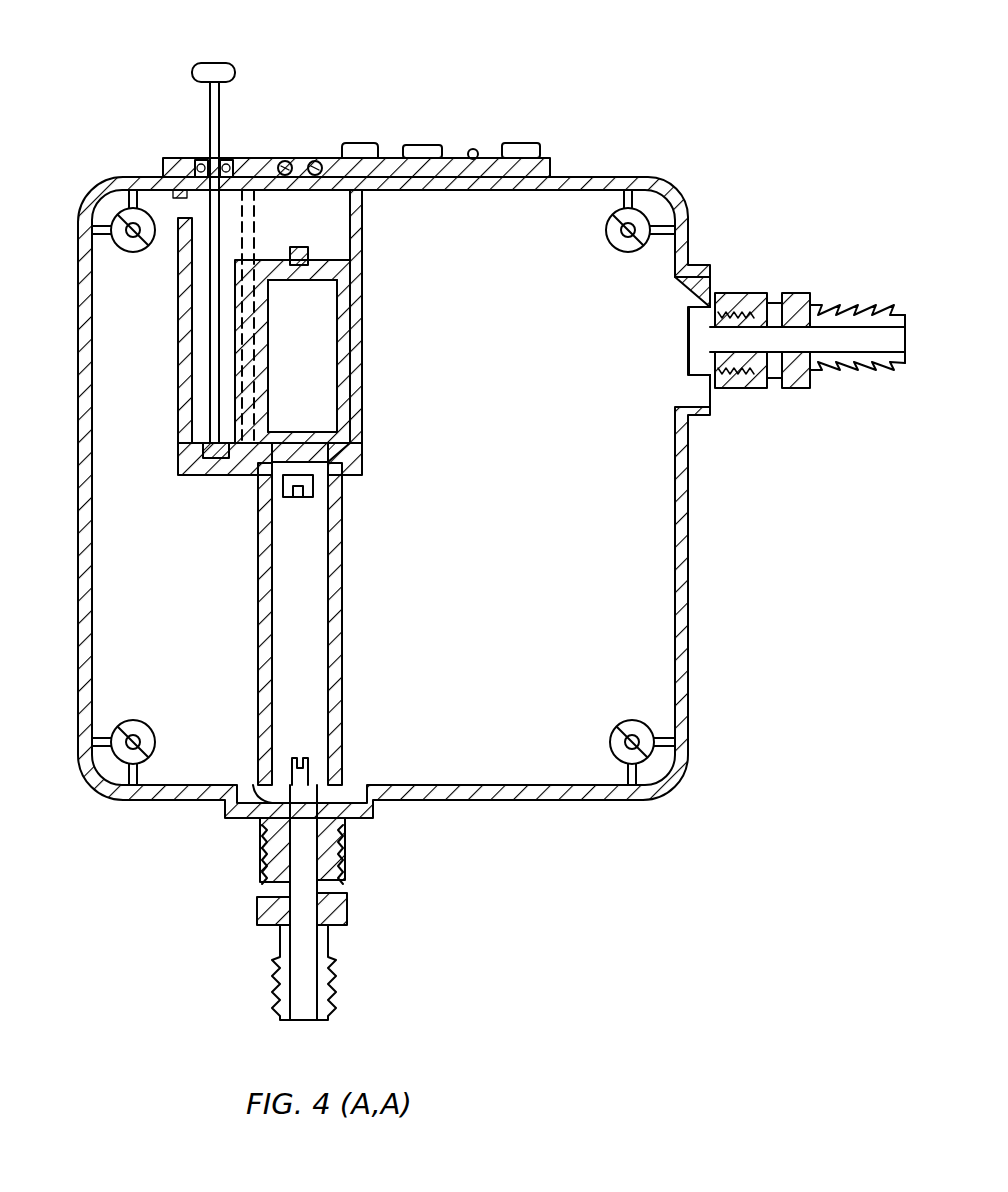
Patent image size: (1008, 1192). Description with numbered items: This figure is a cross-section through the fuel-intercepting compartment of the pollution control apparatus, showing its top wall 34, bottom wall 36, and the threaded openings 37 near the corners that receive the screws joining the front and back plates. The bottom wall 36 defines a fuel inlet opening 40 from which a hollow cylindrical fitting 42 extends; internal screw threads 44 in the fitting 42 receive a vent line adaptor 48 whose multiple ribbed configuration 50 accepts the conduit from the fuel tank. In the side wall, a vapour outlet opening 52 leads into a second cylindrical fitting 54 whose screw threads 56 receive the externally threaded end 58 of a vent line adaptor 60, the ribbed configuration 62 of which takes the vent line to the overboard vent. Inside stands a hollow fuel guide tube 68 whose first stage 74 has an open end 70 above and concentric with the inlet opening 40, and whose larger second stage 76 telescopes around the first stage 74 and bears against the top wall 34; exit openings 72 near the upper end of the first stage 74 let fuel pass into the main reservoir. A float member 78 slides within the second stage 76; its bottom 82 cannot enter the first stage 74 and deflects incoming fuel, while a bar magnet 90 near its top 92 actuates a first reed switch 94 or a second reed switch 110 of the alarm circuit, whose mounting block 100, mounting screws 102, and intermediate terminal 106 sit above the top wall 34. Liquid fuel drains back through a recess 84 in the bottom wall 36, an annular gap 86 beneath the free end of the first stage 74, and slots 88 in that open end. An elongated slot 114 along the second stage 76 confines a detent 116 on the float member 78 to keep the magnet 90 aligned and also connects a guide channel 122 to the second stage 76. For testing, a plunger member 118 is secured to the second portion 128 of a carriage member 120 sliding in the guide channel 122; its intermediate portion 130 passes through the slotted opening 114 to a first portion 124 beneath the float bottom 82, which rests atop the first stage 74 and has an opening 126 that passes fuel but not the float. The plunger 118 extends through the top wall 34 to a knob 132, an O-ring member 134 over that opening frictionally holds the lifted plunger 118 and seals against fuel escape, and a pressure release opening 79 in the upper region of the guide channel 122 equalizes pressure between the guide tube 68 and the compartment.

The top wall 34 is at (580, 177).
The bottom wall 36 is at (575, 800).
The threaded openings 37 is at (105, 207).
The fuel inlet opening 40 is at (262, 830).
The cylindrical fitting 42 is at (348, 835).
The screw threads 44 is at (348, 860).
The vent line adaptor 48 is at (350, 905).
The multiple ribbed configuration 50 is at (335, 985).
The vapour outlet opening 52 is at (685, 285).
The cylindrical fitting 54 is at (705, 268).
The screw threads 56 is at (755, 300).
The externally threaded end 58 is at (715, 360).
The vent line adaptor 60 is at (800, 298).
The multiple ribbed configuration 62 is at (870, 370).
The fuel guide tube 68 is at (390, 452).
The opening 70 is at (262, 780).
The exit openings 72 is at (342, 493).
The first stage 74 is at (342, 560).
The second stage 76 is at (340, 370).
The float member 78 is at (362, 330).
The pressure release opening 79 is at (170, 213).
The bottom 82 is at (290, 420).
The recess 84 is at (255, 785).
The annular gap 86 is at (355, 785).
The slots 88 is at (300, 760).
The bar magnet 90 is at (300, 250).
The top 92 is at (262, 262).
The first reed switch 94 is at (318, 160).
The mounting block 100 is at (383, 160).
The mounting screws 102 is at (427, 150).
The intermediate terminal 106 is at (523, 143).
The second reed switch 110 is at (290, 158).
The elongated slot 114 is at (277, 157).
The detent 116 is at (212, 452).
The plunger member 118 is at (200, 65).
The carriage member 120 is at (365, 443).
The guide channel 122 is at (178, 358).
The first portion 124 is at (262, 480).
The opening 126 is at (362, 435).
The second portion 128 is at (215, 470).
The intermediate portion 130 is at (245, 478).
The knob 132 is at (218, 63).
The O-ring member 134 is at (200, 158).